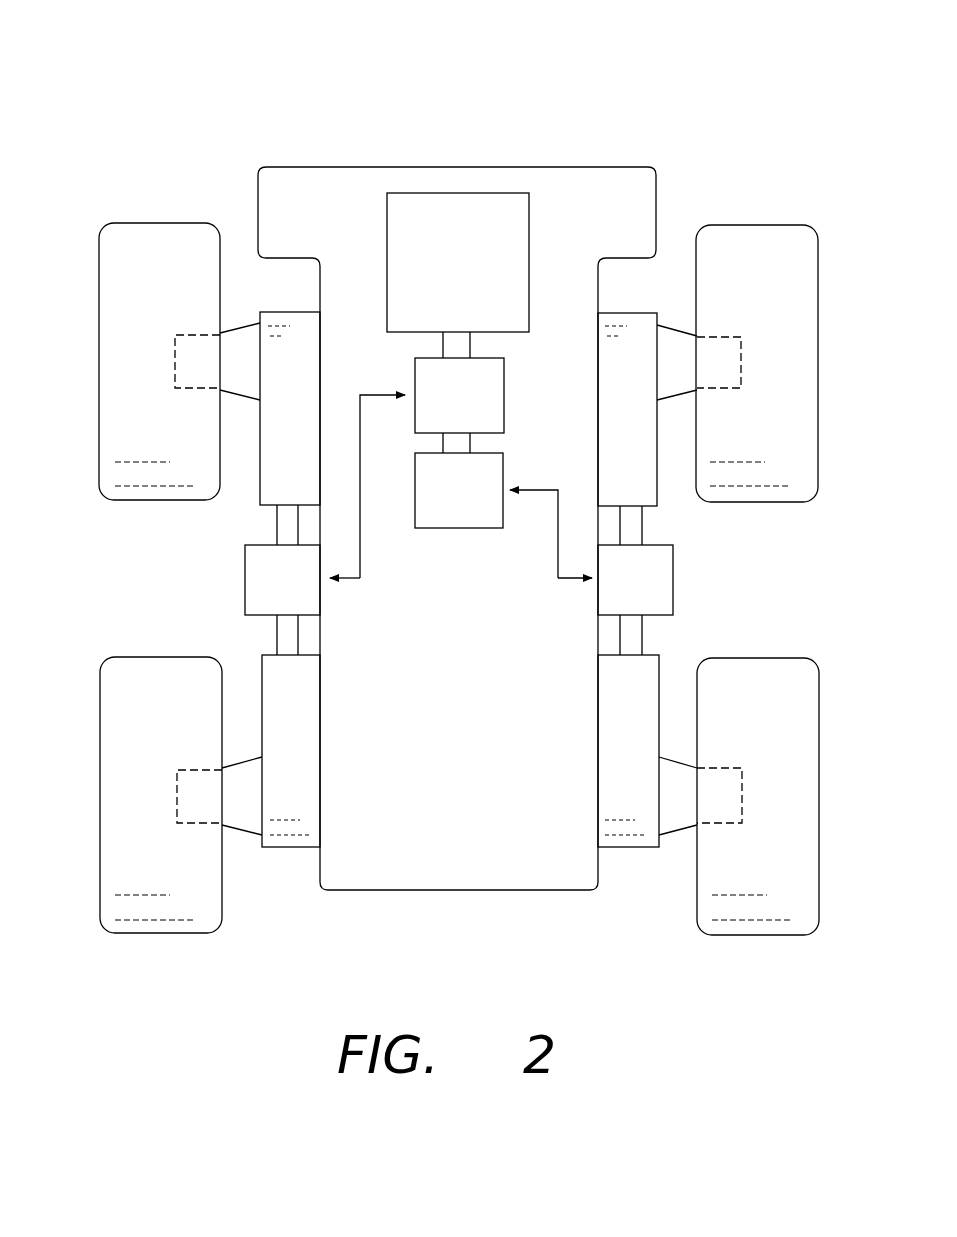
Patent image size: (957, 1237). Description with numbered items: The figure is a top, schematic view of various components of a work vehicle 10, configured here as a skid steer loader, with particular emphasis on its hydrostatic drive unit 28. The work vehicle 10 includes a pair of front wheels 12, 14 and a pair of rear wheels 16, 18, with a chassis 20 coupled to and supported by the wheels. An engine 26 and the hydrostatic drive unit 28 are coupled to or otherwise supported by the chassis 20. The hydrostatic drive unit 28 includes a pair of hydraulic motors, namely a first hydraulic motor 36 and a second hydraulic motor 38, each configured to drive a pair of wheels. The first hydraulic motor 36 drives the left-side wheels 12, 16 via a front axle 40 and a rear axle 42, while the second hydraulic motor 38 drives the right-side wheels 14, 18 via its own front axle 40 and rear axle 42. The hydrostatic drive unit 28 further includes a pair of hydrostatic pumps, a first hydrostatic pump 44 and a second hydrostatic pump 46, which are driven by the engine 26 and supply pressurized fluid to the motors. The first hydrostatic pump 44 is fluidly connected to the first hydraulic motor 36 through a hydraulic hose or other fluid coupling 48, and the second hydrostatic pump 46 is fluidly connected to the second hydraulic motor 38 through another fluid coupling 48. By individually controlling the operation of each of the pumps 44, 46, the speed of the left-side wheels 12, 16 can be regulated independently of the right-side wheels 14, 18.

The work vehicle 10 is at (186, 78).
The front wheel 12 is at (750, 935).
The front wheel 14 is at (168, 933).
The rear wheel 16 is at (757, 504).
The rear wheel 18 is at (157, 504).
The chassis 20 is at (380, 166).
The engine 26 is at (440, 275).
The hydrostatic drive unit 28 is at (498, 413).
The first hydraulic motor 36 is at (675, 592).
The second hydraulic motor 38 is at (245, 592).
The front axle 40 is at (293, 848).
The rear axle 42 is at (298, 328).
The first hydrostatic pump 44 is at (440, 503).
The second hydrostatic pump 46 is at (440, 408).
The fluid coupling 48 is at (363, 543).